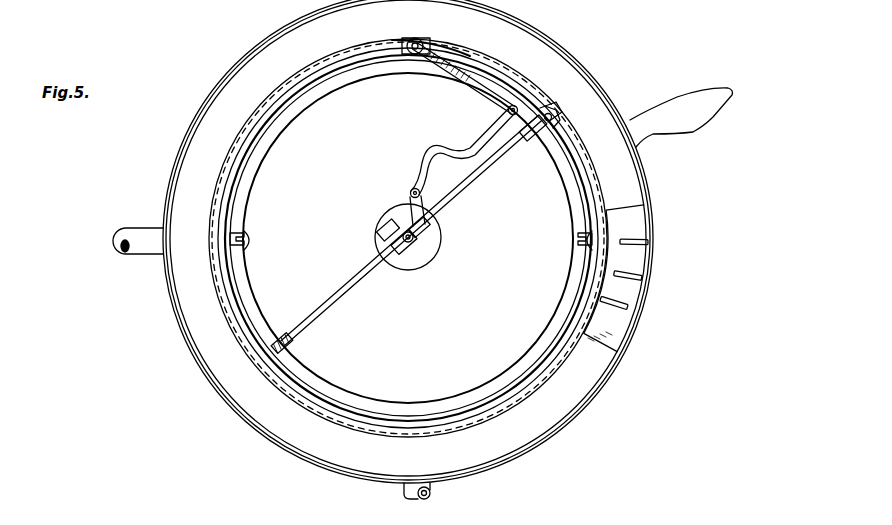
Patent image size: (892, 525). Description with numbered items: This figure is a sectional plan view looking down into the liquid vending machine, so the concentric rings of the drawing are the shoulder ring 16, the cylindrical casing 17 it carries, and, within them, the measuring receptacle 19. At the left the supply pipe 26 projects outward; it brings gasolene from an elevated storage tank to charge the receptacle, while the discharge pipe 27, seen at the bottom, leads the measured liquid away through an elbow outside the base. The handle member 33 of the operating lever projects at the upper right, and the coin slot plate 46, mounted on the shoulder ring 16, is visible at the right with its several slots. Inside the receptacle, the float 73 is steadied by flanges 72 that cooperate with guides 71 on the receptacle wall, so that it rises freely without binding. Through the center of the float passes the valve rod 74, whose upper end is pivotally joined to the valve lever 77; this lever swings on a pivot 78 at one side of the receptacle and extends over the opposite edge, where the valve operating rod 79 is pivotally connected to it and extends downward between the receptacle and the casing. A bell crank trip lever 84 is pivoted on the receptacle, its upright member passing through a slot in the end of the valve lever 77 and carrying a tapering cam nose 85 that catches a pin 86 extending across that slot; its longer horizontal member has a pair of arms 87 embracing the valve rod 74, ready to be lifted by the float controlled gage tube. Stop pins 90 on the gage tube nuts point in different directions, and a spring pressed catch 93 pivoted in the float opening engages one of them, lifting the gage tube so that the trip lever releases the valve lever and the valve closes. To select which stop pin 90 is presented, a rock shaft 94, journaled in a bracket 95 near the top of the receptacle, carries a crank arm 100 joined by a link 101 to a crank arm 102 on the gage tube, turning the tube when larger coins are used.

The shoulder ring 16 is at (212, 370).
The casing 17 is at (214, 290).
The measuring receptacle 19 is at (230, 180).
The supply pipe 26 is at (145, 253).
The discharge pipe 27 is at (436, 494).
The handle member 33 is at (692, 126).
The coin slot plate 46 is at (640, 300).
The guides 71 is at (247, 242).
The flanges 72 is at (248, 244).
The float 73 is at (462, 337).
The valve rod 74 is at (408, 248).
The valve lever 77 is at (364, 290).
The pivot 78 is at (290, 345).
The valve operating rod 79 is at (543, 120).
The bell crank trip lever 84 is at (448, 212).
The cam nose 85 is at (546, 133).
The pin 86 is at (524, 137).
The arms 87 is at (382, 246).
The stop pins 90 is at (408, 206).
The catch 93 is at (378, 232).
The rock shaft 94 is at (415, 38).
The bracket 95 is at (425, 40).
The crank arm 100 is at (478, 89).
The link 101 is at (458, 150).
The crank arm 102 is at (422, 196).